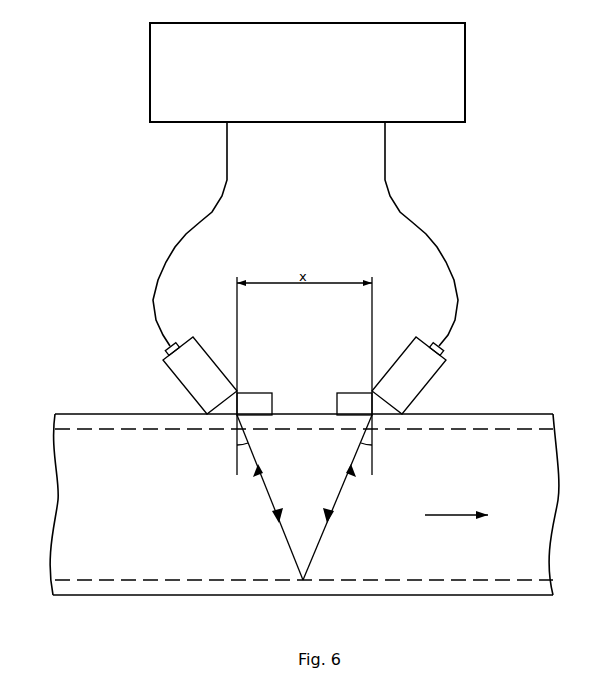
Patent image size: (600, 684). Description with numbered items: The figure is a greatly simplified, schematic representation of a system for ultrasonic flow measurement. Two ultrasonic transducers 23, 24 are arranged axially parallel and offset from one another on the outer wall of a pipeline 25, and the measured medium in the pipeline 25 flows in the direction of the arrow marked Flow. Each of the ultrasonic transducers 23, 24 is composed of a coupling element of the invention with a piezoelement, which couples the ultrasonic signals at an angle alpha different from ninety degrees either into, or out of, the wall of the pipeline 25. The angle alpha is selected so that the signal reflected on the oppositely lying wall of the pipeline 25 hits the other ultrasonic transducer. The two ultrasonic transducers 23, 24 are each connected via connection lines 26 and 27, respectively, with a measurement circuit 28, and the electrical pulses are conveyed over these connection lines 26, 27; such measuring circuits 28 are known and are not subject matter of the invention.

The ultrasonic transducer 23 is at (205, 372).
The ultrasonic transducer 24 is at (404, 372).
The pipeline 25 is at (370, 567).
The connection line 26 is at (221, 197).
The connection line 27 is at (388, 197).
The measurement circuit 28 is at (452, 76).